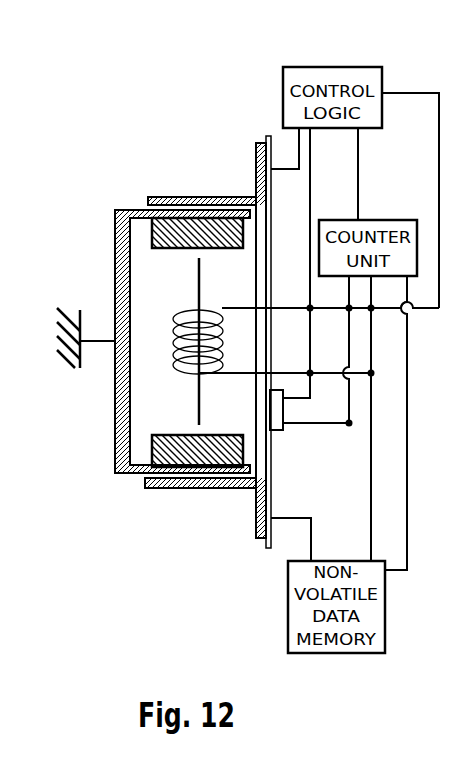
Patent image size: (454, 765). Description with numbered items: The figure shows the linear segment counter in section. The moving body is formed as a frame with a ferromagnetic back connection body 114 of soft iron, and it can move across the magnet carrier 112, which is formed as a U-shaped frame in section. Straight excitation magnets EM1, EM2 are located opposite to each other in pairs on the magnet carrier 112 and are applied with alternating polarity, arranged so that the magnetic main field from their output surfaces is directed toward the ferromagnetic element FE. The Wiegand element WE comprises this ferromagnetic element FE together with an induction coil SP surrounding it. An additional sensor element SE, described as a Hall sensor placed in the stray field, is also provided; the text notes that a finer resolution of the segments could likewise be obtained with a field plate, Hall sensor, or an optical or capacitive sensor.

The magnet carrier 112 is at (118, 436).
The ferromagnetic back connection body 114 is at (245, 490).
The excitation magnet EM1 is at (144, 483).
The excitation magnet EM2 is at (138, 215).
The ferromagnetic element FE is at (200, 392).
The induction coil SP is at (187, 358).
The Wiegand element WE is at (150, 298).
The sensor SE is at (272, 427).